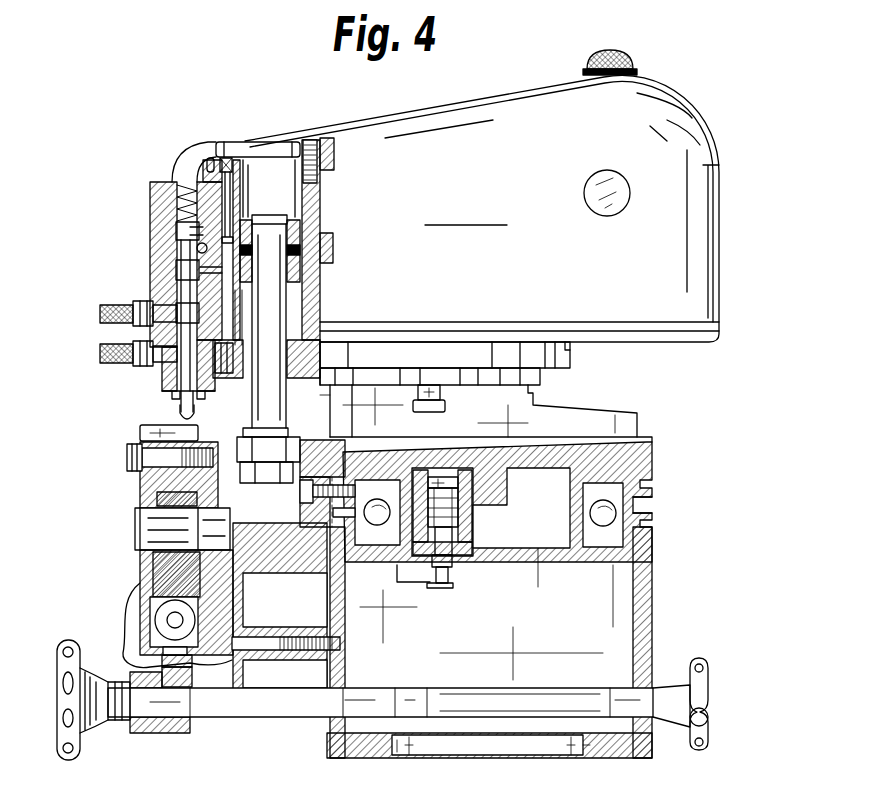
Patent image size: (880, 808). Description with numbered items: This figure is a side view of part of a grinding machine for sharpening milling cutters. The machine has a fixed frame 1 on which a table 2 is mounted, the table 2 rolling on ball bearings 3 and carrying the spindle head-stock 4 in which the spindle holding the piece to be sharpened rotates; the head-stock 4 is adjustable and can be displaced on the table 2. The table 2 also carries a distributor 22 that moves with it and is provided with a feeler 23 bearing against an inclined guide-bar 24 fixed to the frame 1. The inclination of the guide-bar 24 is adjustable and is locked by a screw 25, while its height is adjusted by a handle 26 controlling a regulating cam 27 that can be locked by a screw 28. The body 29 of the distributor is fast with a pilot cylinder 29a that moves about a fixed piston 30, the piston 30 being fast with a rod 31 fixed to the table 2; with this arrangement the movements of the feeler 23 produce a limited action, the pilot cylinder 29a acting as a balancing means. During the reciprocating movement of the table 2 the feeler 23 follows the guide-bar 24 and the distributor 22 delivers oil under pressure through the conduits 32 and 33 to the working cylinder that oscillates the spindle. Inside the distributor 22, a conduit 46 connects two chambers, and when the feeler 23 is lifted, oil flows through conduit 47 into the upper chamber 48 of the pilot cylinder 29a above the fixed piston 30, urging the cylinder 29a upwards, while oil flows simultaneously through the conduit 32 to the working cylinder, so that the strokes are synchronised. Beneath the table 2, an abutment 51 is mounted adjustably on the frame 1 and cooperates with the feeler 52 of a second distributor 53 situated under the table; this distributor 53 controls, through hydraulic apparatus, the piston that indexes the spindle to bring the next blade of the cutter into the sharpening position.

The fixed frame 1 is at (640, 585).
The table 2 is at (651, 452).
The ball bearings 3 is at (608, 517).
The spindle head-stock 4 is at (502, 107).
The distributor 22 is at (184, 131).
The feeler 23 is at (180, 408).
The inclined guide-bar 24 is at (196, 430).
The screw 25 is at (128, 597).
The handle 26 is at (92, 728).
The regulating cam 27 is at (133, 676).
The screw 28 is at (689, 748).
The body of the distributor 29 is at (153, 233).
The pilot cylinder 29a is at (318, 196).
The fixed piston 30 is at (248, 220).
The rod 31 is at (322, 297).
The conduit 32 is at (124, 302).
The conduit 33 is at (100, 352).
The conduit 46 is at (227, 314).
The conduit 47 is at (225, 191).
The upper chamber 48 is at (322, 219).
The abutment 51 is at (413, 582).
The feeler 52 is at (452, 588).
The distributor 53 is at (450, 462).